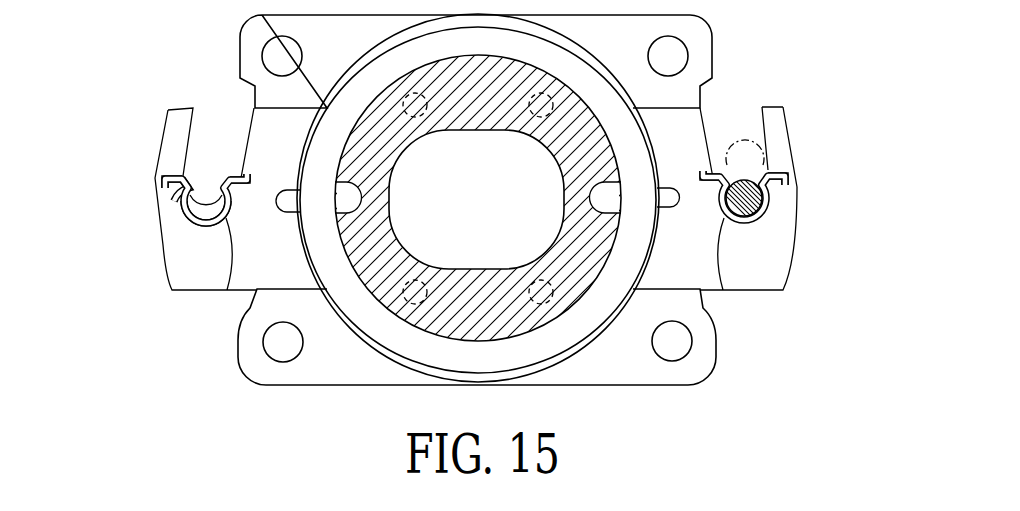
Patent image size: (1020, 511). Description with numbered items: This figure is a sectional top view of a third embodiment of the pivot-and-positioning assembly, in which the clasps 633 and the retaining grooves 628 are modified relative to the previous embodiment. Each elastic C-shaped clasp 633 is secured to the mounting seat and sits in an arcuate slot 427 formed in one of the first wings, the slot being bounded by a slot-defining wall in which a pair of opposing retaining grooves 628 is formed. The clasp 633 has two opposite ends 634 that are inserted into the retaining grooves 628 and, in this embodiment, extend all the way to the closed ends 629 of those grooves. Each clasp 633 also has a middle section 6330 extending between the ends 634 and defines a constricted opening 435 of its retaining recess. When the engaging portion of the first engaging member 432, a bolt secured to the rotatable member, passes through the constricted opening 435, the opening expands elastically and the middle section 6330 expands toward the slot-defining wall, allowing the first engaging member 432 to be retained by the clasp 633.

The arcuate slot 427 is at (184, 135).
The constricted opening 435 is at (210, 195).
The ends of the clasps 634 is at (165, 175).
The closed ends of the retaining grooves 629 is at (163, 181).
The retaining grooves 628 is at (181, 203).
The clasp 633 is at (196, 224).
The middle section 6330 is at (222, 291).
The first engaging member 432 is at (747, 178).